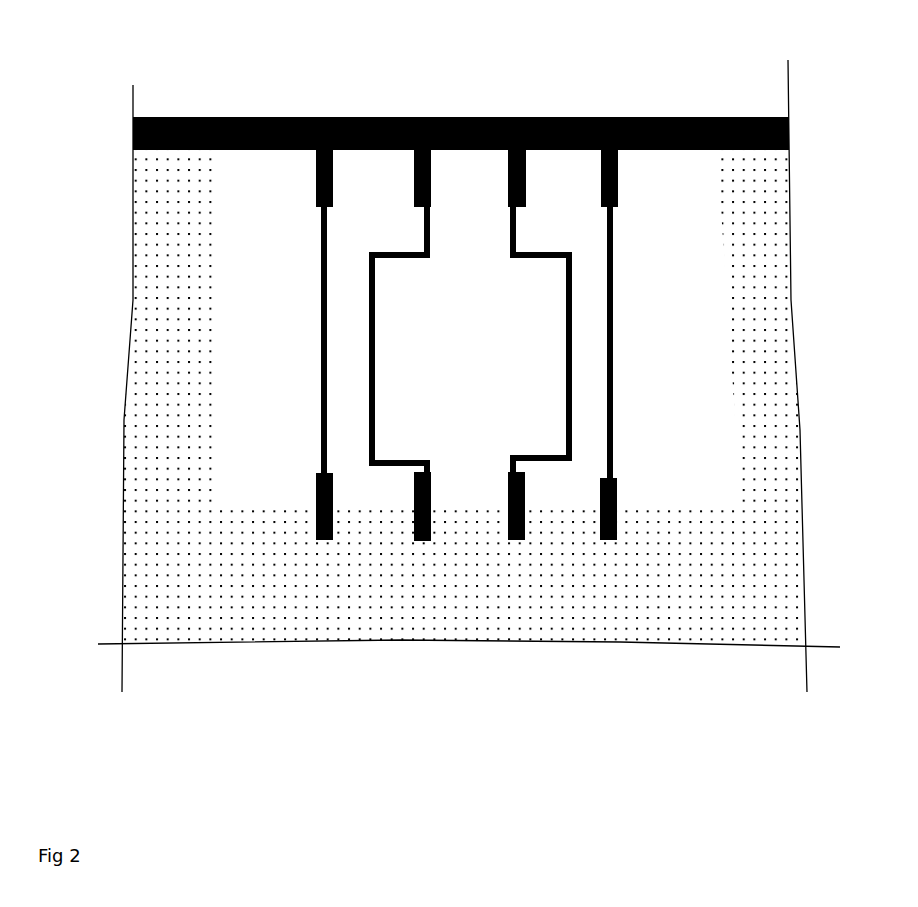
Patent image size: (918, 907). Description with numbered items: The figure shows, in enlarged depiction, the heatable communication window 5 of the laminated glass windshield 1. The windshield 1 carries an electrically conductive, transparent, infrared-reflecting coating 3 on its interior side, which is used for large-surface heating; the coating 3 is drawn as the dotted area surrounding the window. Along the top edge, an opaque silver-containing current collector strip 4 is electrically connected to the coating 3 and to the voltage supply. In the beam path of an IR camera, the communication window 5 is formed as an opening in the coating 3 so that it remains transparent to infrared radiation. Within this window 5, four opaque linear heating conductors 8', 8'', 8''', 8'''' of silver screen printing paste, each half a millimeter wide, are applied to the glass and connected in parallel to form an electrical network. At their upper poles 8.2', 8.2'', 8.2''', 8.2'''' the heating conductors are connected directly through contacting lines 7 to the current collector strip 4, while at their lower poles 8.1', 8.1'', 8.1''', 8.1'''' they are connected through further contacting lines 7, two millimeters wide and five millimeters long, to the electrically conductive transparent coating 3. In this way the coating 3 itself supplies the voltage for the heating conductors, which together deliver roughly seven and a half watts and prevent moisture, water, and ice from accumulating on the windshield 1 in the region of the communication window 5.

The laminated glass windshield 1 is at (725, 97).
The electrically conductive transparent coating 3 is at (170, 210).
The current collector strip 4 is at (173, 118).
The communication window 5 is at (433, 287).
The contacting line 7 is at (627, 198).
The heating conductor 8' is at (637, 342).
The heating conductor 8'' is at (541, 340).
The heating conductor 8''' is at (405, 340).
The heating conductor 8'''' is at (294, 340).
The pole of the heating conductor 8.1' is at (671, 612).
The pole of the heating conductor 8.1'' is at (581, 612).
The pole of the heating conductor 8.1''' is at (491, 612).
The pole of the heating conductor 8.1'''' is at (395, 609).
The pole of the heating conductor 8.2' is at (645, 131).
The pole of the heating conductor 8.2'' is at (555, 145).
The pole of the heating conductor 8.2''' is at (466, 134).
The pole of the heating conductor 8.2'''' is at (369, 131).